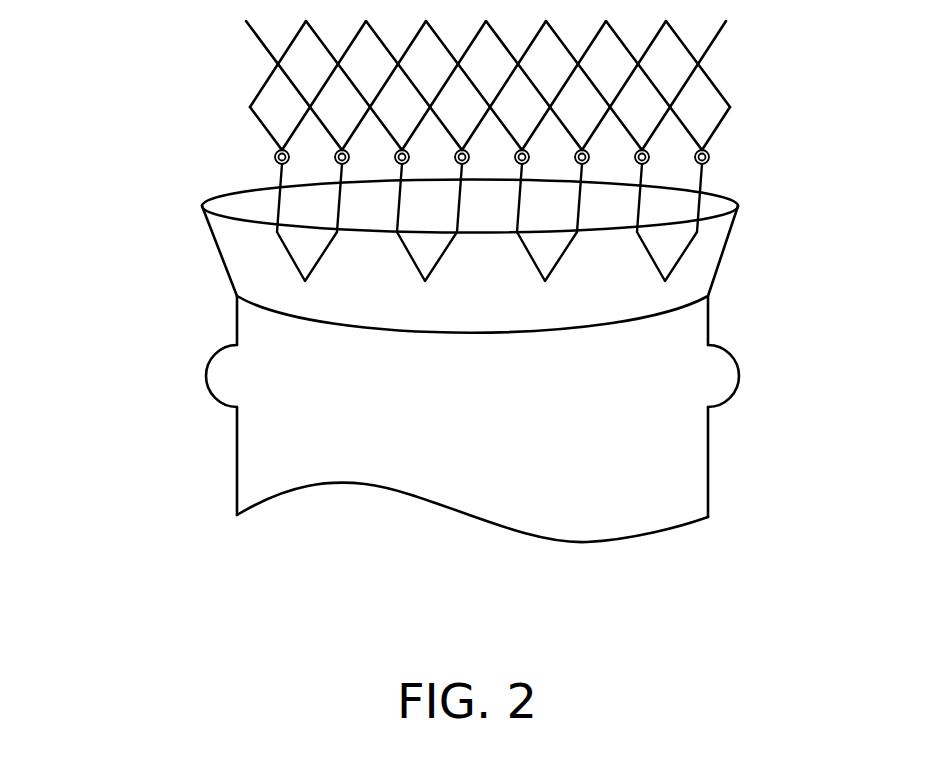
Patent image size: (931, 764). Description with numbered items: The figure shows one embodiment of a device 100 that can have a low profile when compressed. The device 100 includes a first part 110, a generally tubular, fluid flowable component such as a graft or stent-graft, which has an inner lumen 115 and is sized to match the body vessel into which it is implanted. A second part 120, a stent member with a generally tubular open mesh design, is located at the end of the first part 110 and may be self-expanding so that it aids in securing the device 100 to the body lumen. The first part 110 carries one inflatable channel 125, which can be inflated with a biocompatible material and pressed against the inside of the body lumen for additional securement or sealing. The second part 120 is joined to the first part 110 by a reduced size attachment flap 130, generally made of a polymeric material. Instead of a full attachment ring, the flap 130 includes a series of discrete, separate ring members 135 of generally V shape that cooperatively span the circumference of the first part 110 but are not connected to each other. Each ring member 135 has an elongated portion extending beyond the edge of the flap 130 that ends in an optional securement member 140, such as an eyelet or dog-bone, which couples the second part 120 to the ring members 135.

The device 100 is at (462, 319).
The first part 110 is at (535, 463).
The inner lumen 115 is at (461, 545).
The second part 120 is at (772, 72).
The inflatable channel 125 is at (725, 377).
The reduced size attachment flap 130 is at (238, 273).
The ring members 135 is at (683, 255).
The securement member 140 is at (710, 155).